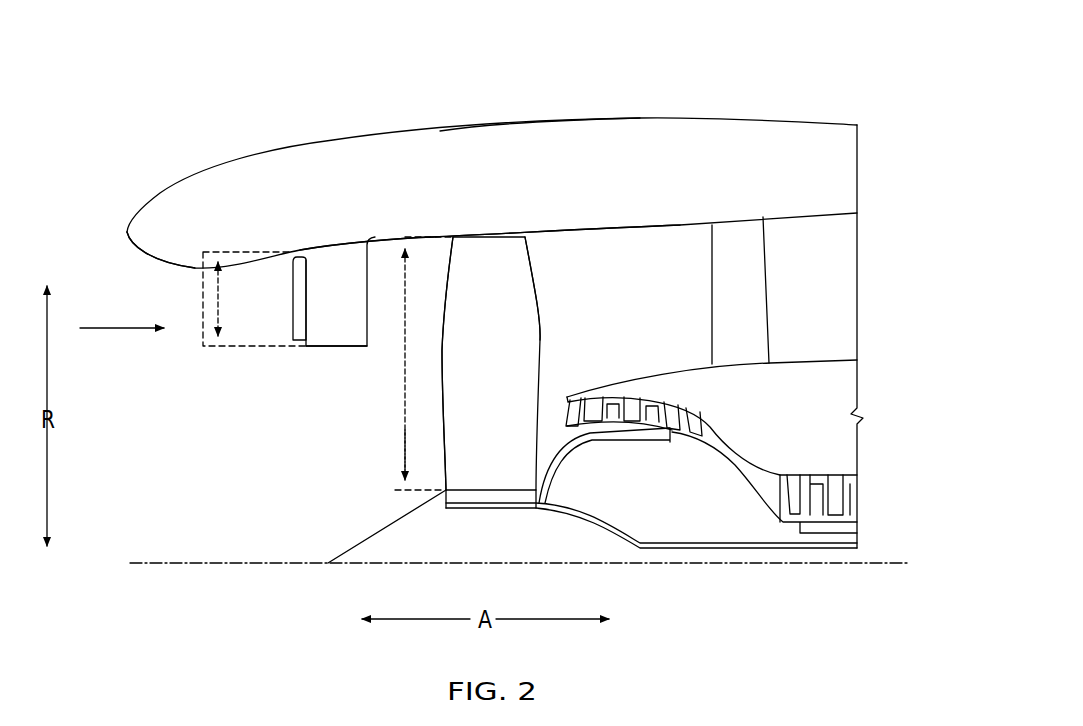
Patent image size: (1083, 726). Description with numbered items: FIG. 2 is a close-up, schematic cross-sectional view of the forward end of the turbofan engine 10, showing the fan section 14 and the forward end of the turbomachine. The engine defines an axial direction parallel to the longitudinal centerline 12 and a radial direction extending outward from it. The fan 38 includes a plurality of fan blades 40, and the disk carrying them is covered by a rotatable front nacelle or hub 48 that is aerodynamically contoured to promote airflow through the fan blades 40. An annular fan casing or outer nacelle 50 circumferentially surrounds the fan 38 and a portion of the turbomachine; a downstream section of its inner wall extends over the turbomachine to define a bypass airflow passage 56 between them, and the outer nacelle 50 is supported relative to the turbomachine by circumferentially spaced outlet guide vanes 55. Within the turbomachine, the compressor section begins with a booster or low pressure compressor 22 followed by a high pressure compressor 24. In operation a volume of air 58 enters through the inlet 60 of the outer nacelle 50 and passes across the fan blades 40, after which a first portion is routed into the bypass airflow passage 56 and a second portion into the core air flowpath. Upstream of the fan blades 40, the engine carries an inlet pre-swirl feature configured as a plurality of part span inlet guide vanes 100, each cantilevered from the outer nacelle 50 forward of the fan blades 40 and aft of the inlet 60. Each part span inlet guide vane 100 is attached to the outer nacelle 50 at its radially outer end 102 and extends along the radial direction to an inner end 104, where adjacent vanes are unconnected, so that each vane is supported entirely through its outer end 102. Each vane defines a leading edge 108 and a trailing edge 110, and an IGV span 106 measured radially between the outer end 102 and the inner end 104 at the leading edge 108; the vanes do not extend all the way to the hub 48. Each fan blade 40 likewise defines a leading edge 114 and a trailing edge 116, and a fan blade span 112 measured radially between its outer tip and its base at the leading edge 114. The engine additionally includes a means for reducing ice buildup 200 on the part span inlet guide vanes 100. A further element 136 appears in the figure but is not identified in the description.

The turbofan engine 10 is at (674, 86).
The longitudinal centerline 12 is at (205, 570).
The fan section 14 is at (364, 154).
The low pressure compressor 22 is at (697, 398).
The high pressure compressor 24 is at (811, 458).
The fan 38 is at (502, 210).
The fan blade 40 is at (525, 357).
The hub 48 is at (352, 548).
The outer nacelle 50 is at (478, 128).
The outlet guide vane 55 is at (755, 307).
The bypass airflow passage 56 is at (672, 312).
The volume of air 58 is at (138, 330).
The inlet 60 is at (116, 287).
The part span inlet guide vane 100 is at (326, 246).
The outer end 102 is at (349, 234).
The inner end 104 is at (340, 352).
The IGV span 106 is at (203, 306).
The leading edge 108 is at (276, 321).
The trailing edge 110 is at (378, 322).
The fan blade span 112 is at (402, 432).
The leading edge 114 is at (443, 350).
The trailing edge 116 is at (544, 327).
The shaft 136 is at (703, 552).
The means for reducing ice buildup 200 is at (297, 257).